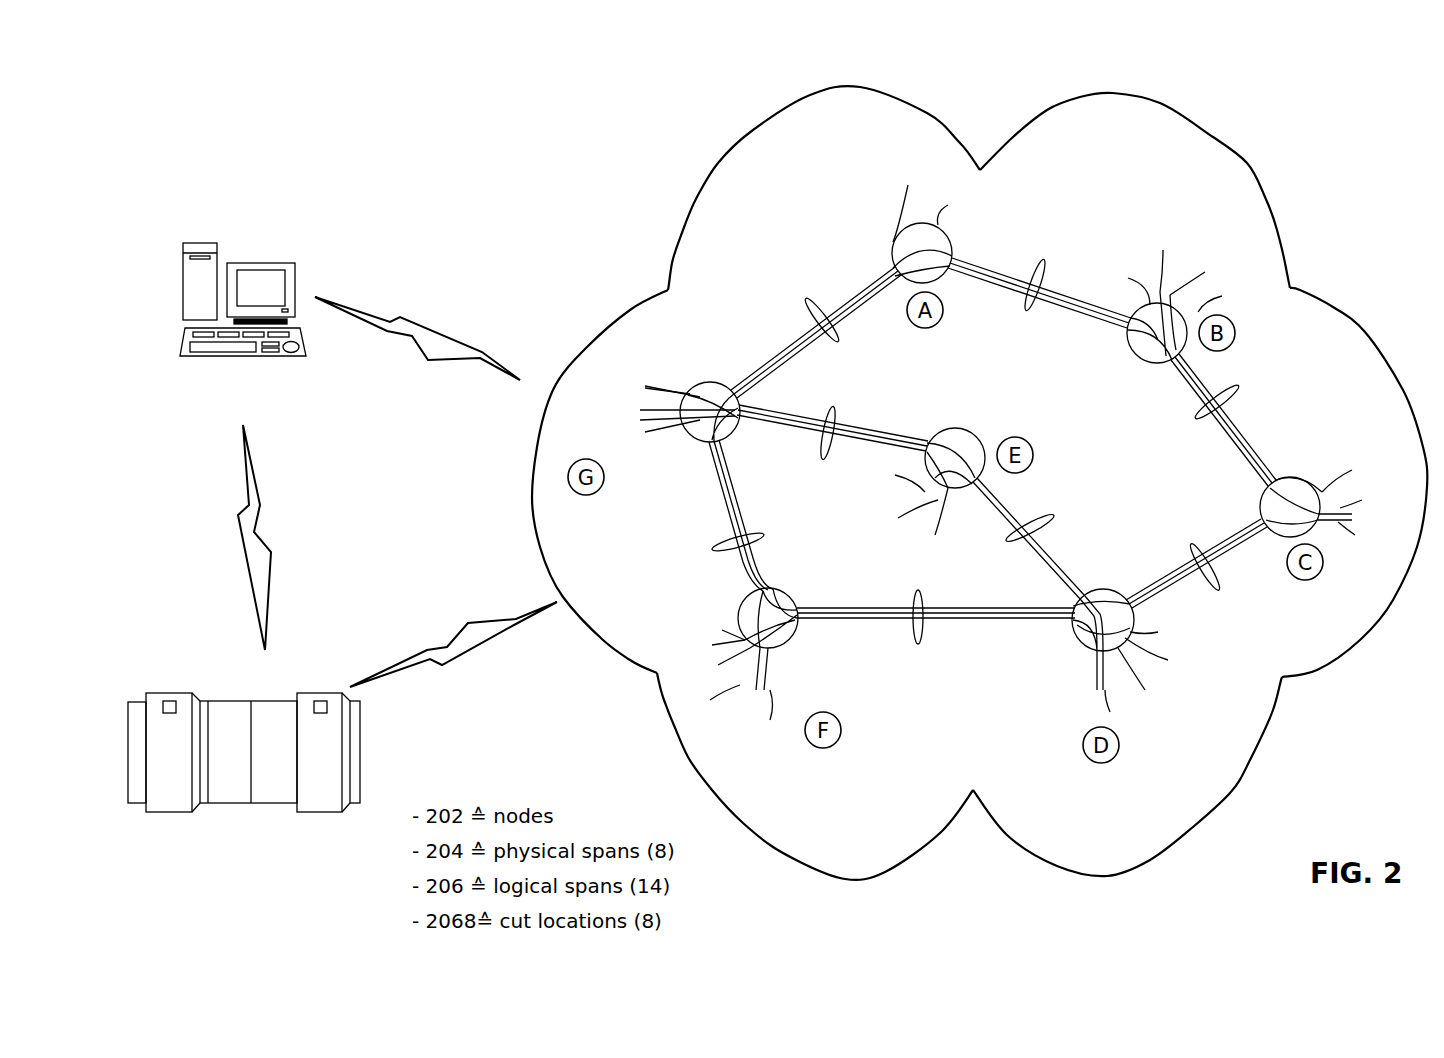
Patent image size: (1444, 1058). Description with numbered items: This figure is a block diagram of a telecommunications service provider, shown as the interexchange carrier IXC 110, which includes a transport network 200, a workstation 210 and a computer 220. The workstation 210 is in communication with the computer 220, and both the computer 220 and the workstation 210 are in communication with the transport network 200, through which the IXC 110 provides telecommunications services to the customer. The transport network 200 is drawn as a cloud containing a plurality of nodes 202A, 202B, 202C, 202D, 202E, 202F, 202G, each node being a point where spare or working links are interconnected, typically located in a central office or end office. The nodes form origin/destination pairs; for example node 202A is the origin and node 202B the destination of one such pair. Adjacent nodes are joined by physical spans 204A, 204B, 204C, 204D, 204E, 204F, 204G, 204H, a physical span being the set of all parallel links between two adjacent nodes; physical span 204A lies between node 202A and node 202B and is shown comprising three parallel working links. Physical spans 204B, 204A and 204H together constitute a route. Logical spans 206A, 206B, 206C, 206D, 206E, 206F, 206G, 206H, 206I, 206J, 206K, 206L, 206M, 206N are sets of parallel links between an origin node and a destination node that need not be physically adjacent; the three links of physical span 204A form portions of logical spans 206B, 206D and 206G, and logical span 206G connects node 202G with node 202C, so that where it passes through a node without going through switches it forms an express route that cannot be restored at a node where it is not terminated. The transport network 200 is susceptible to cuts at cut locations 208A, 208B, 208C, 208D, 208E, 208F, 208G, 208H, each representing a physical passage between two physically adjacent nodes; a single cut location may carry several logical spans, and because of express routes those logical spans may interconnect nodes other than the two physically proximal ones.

The IXC 110 is at (1345, 118).
The transport network 200 is at (778, 118).
The workstation 210 is at (266, 264).
The computer 220 is at (362, 752).
The node 202A is at (953, 242).
The node 202B is at (1131, 346).
The node 202C is at (1298, 479).
The node 202D is at (1098, 592).
The node 202E is at (968, 437).
The node 202F is at (777, 598).
The node 202G is at (728, 382).
The physical span 204A is at (1121, 301).
The physical span 204B is at (1235, 472).
The physical span 204C is at (1255, 520).
The physical span 204D is at (1065, 639).
The physical span 204E is at (1059, 592).
The physical span 204F is at (707, 455).
The physical span 204G is at (913, 444).
The physical span 204H is at (865, 269).
The logical span 206A is at (700, 640).
The logical span 206B is at (1078, 424).
The logical span 206C is at (1299, 382).
The logical span 206D is at (873, 325).
The logical span 206E is at (940, 468).
The logical span 206F is at (1191, 439).
The logical span 206G is at (680, 390).
The logical span 206H is at (1075, 624).
The logical span 206I is at (645, 410).
The logical span 206J is at (655, 420).
The logical span 206K is at (675, 432).
The logical span 206L is at (1094, 672).
The logical span 206M is at (1025, 606).
The logical span 206N is at (705, 662).
The cut location 208A is at (1028, 305).
The cut location 208B is at (1262, 395).
The cut location 208C is at (1218, 583).
The cut location 208D is at (912, 598).
The cut location 208E is at (1048, 522).
The cut location 208F is at (782, 527).
The cut location 208G is at (822, 448).
The cut location 208H is at (826, 330).